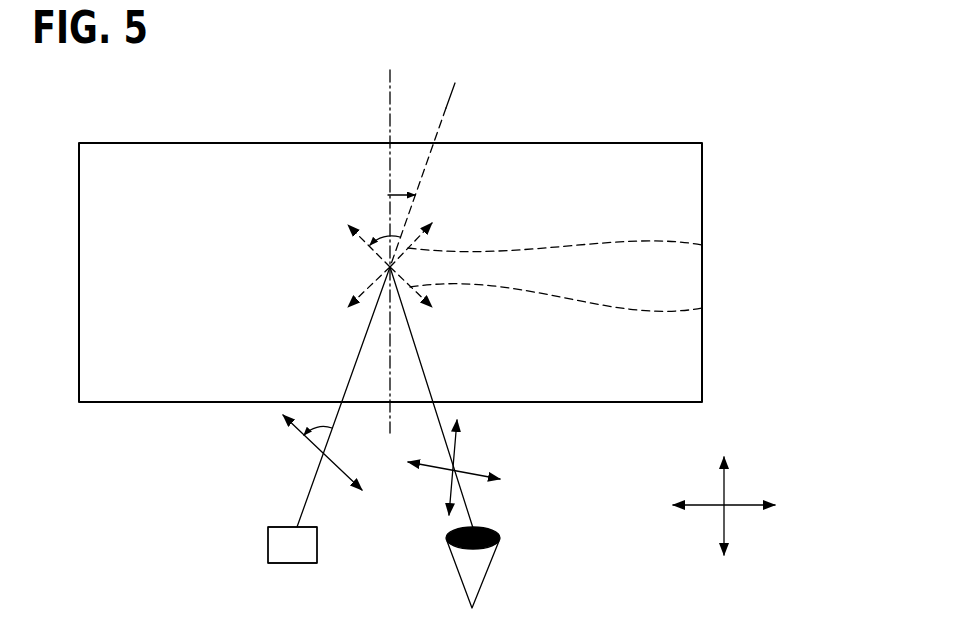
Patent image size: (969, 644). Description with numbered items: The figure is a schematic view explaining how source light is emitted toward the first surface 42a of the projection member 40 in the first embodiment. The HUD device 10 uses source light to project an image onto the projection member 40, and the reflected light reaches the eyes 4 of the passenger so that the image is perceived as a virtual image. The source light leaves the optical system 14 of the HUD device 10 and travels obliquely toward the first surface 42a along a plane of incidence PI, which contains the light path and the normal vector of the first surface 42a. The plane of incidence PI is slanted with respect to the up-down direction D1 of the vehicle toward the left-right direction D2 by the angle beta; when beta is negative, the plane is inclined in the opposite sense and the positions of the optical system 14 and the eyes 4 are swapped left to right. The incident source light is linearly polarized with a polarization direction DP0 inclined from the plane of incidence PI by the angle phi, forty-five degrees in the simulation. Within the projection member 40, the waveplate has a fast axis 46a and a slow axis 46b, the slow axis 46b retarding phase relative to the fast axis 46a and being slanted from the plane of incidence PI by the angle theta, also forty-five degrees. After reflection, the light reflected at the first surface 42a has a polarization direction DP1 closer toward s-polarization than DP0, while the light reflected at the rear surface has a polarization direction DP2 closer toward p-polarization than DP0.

The projection member 40 is at (661, 143).
The first surface 42a is at (170, 275).
The fast axis 46a is at (704, 248).
The slow axis 46b is at (704, 308).
The eyes 4 is at (500, 540).
The HUD device 10 is at (292, 565).
The optical system 14 is at (292, 545).
The plane of incidence PI is at (447, 110).
The up-down direction D1 is at (391, 85).
The left-right direction D2 is at (702, 505).
The polarization direction DP0 is at (337, 467).
The polarization direction DP1 is at (470, 470).
The polarization direction DP2 is at (457, 442).
The angle theta is at (386, 238).
The angle of inclination beta is at (394, 194).
The angle phi is at (318, 420).